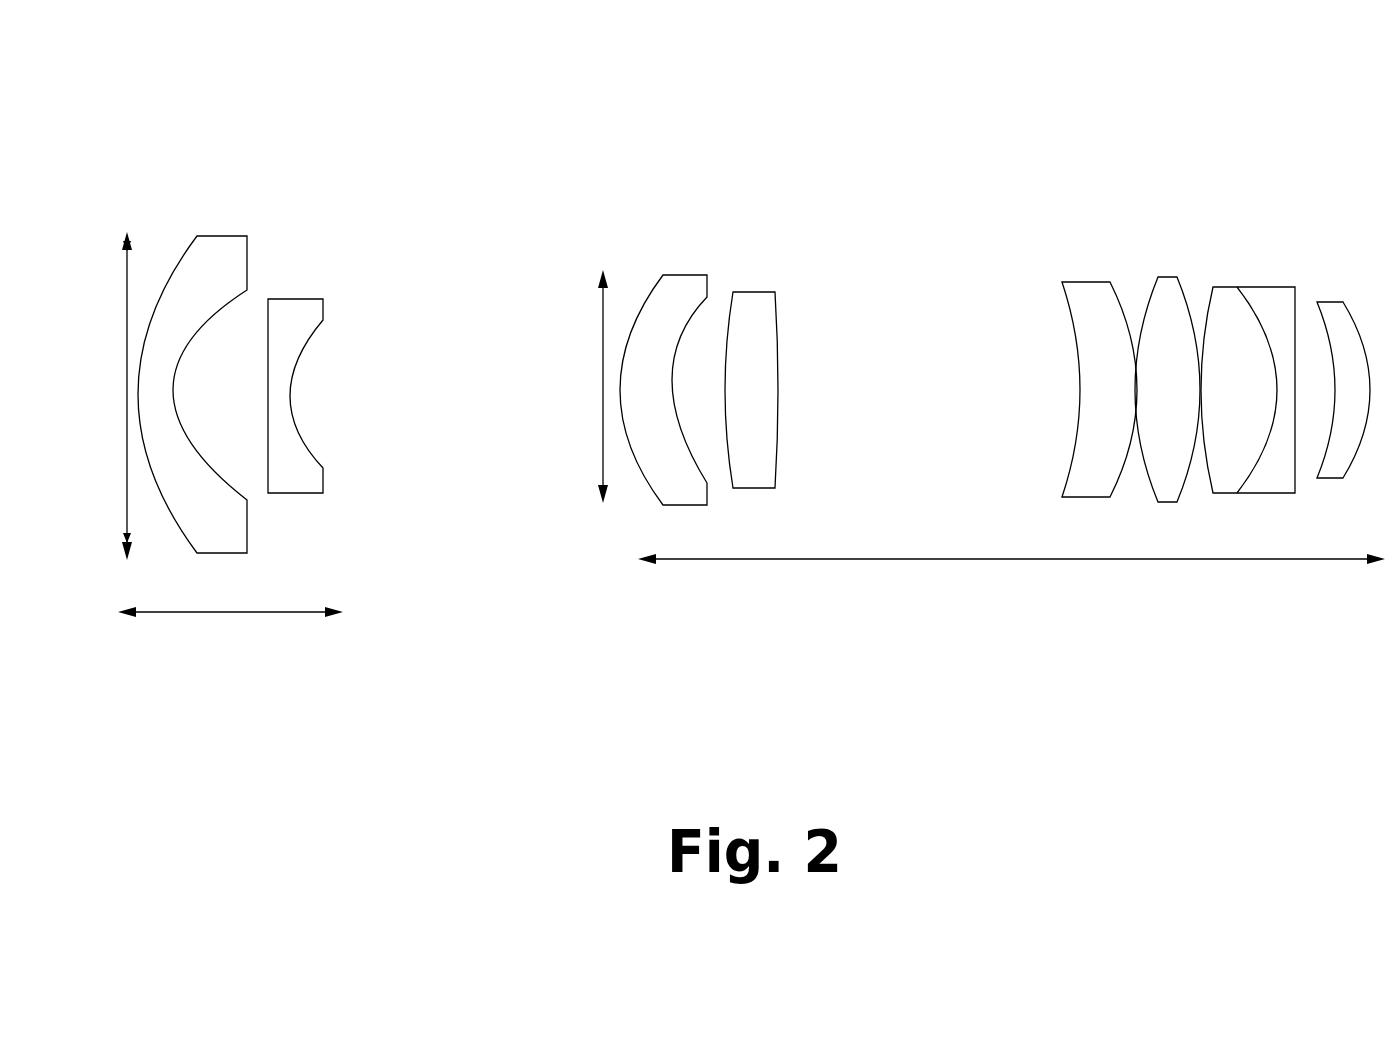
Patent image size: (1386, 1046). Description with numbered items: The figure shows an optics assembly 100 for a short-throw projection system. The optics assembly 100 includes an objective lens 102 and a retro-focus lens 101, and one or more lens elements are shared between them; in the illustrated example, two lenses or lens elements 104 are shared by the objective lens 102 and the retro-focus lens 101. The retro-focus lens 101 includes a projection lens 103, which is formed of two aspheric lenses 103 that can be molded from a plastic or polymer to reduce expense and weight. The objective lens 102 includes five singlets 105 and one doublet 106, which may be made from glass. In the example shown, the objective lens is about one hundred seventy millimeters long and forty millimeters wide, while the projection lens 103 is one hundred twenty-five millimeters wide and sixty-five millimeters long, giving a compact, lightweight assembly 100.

The optics assembly 100 is at (418, 132).
The retro-focus lens 101 is at (803, 637).
The objective lens 102 is at (1362, 225).
The projection lens 103 is at (290, 313).
The shared lens elements 104 is at (757, 320).
The singlets 105 is at (673, 493).
The doublet 106 is at (1280, 322).